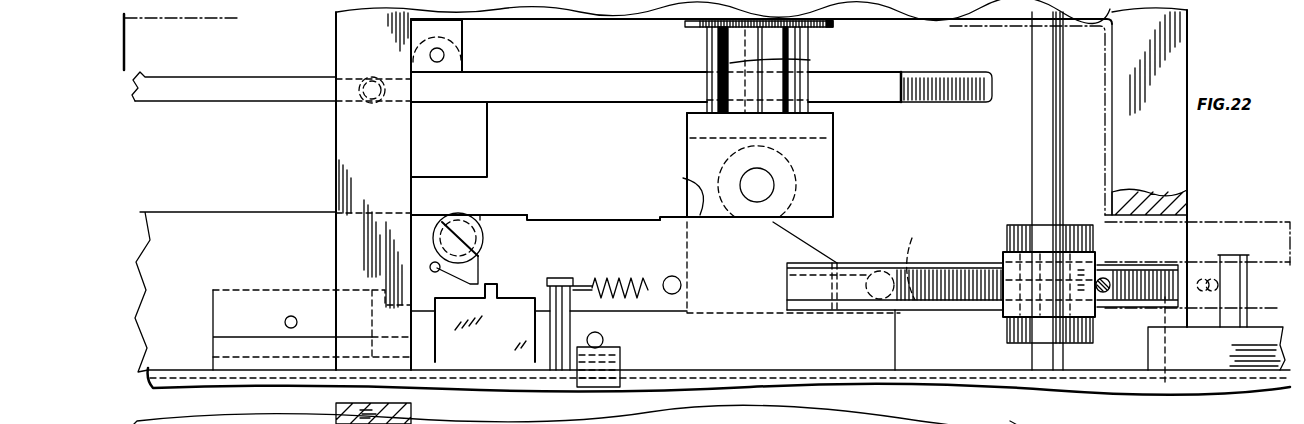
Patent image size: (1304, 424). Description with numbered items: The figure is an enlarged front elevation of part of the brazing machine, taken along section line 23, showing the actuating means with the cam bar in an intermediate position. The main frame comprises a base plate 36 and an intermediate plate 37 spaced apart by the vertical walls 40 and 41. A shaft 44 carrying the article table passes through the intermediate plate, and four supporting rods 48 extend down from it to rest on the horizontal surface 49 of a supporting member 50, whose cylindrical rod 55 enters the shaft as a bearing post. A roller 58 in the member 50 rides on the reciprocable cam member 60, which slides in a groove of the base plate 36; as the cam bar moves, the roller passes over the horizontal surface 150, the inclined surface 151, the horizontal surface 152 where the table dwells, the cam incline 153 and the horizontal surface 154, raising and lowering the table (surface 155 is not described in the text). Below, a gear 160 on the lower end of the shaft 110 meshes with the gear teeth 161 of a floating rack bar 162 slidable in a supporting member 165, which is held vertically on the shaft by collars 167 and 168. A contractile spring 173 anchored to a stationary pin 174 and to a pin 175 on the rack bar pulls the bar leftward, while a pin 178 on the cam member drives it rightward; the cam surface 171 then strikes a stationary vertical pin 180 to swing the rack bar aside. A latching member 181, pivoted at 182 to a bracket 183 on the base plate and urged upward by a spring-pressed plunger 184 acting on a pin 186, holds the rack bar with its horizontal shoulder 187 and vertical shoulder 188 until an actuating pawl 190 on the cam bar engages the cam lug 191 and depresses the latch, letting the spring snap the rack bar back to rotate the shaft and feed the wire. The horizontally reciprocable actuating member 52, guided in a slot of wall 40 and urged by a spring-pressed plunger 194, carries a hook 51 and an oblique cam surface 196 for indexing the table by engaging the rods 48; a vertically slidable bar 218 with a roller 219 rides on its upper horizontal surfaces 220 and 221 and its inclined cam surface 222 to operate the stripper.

The section line 23- 23 is at (707, 139).
The base plate 36 is at (870, 390).
The intermediate plate 37 is at (640, 42).
The vertical wall 40 is at (336, 158).
The vertical wall 41 is at (1173, 133).
The shaft 44 is at (829, 28).
The supporting rods 48 is at (812, 57).
The horizontal surface 49 is at (690, 112).
The supporting member 50 is at (835, 131).
The hook 51 is at (904, 103).
The actuating member 52 is at (178, 101).
The cylindrical rod 55 is at (703, 27).
The roller 58 is at (797, 167).
The cam member 60 is at (210, 212).
The shaft 110 is at (1040, 132).
The horizontal surface 150 is at (949, 256).
The inclined surface 151 is at (812, 238).
The horizontal surface 152 is at (675, 191).
The cam incline 153 is at (665, 218).
The horizontal surface 154 is at (607, 218).
The plate 155 is at (530, 216).
The gear 160 is at (1003, 255).
The gear teeth 161 is at (979, 309).
The rack bar 162 is at (871, 258).
The supporting member 165 is at (1003, 258).
The collar 167 is at (1026, 226).
The collar 168 is at (1013, 343).
The cam surface 171 is at (1140, 271).
The contractile spring 173 is at (621, 278).
The stationary pin 174 is at (560, 278).
The pin 175 is at (1104, 279).
The pin 178 is at (672, 276).
The stationary vertical pin 180 is at (1231, 256).
The latching member 181 is at (887, 358).
The pivot 182 is at (291, 316).
The bracket 183 is at (230, 310).
The spring-pressed plunger 184 is at (620, 355).
The pin 186 is at (603, 338).
The horizontal shoulder 187 is at (905, 311).
The vertical shoulder 188 is at (872, 309).
The actuating pawl 190 is at (483, 256).
The cam lug 191 is at (490, 284).
The spring-pressed plunger 194 is at (352, 78).
The oblique cam surface 196 is at (956, 74).
The bar 218 is at (465, 30).
The roller 219 is at (465, 43).
The upper horizontal surface 220 is at (246, 88).
The upper horizontal surface 221 is at (618, 64).
The inclined cam surface 222 is at (478, 72).